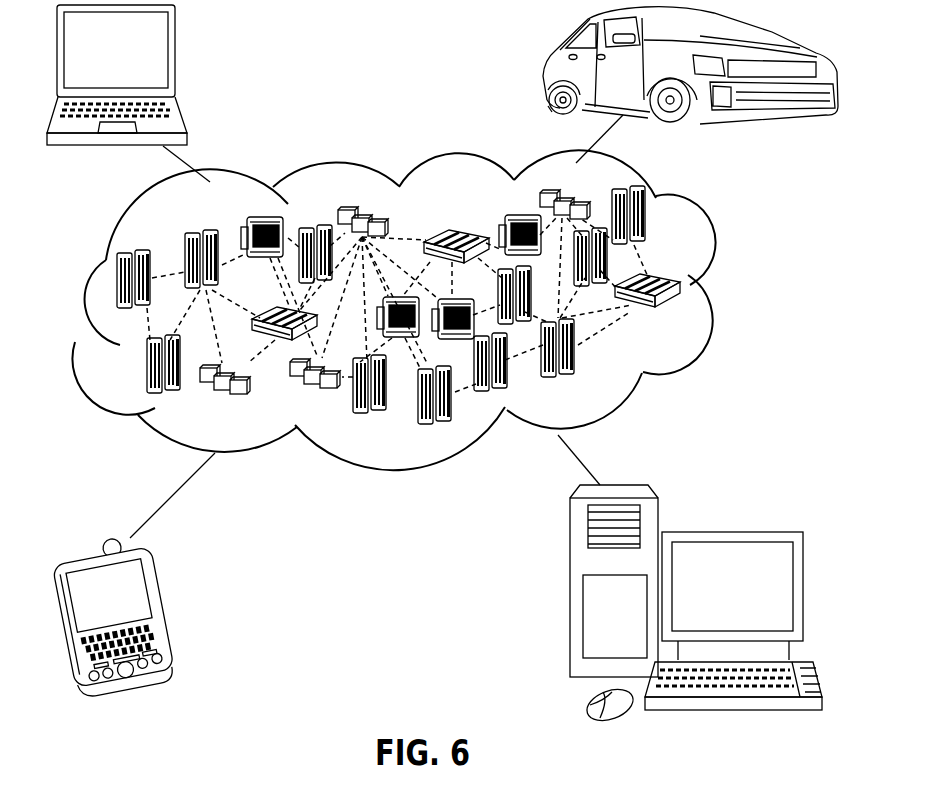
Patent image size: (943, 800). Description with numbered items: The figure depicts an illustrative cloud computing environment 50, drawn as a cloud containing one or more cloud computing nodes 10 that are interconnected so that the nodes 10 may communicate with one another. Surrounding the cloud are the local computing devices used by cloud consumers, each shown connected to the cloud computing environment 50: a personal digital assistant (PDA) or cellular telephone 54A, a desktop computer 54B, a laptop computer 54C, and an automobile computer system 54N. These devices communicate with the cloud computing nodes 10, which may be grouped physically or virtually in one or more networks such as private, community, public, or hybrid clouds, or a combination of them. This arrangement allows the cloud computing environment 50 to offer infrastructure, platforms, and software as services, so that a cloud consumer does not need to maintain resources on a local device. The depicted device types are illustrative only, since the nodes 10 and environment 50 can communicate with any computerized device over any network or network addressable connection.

The cloud computing nodes 10 is at (679, 312).
The cloud computing environment 50 is at (734, 290).
The personal digital assistant (PDA) or cellular telephone 54A is at (165, 609).
The desktop computer 54B is at (731, 532).
The laptop computer 54C is at (176, 58).
The automobile computer system 54N is at (547, 72).